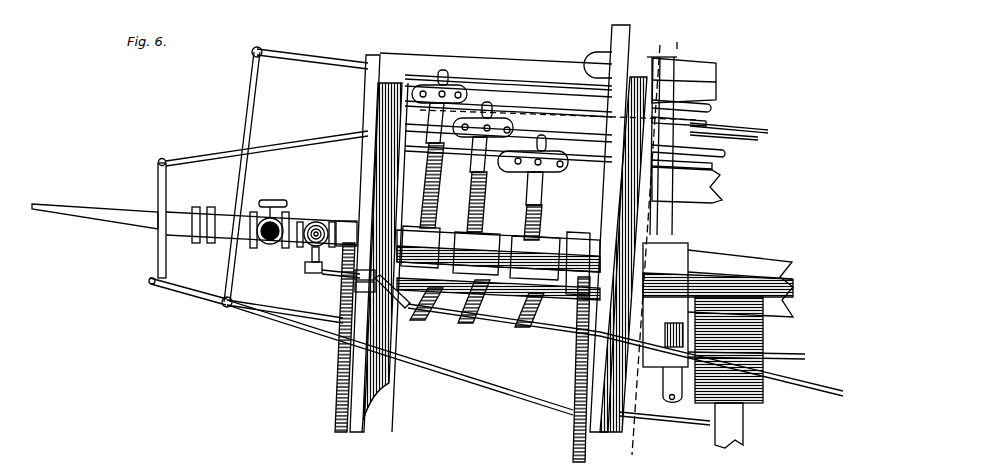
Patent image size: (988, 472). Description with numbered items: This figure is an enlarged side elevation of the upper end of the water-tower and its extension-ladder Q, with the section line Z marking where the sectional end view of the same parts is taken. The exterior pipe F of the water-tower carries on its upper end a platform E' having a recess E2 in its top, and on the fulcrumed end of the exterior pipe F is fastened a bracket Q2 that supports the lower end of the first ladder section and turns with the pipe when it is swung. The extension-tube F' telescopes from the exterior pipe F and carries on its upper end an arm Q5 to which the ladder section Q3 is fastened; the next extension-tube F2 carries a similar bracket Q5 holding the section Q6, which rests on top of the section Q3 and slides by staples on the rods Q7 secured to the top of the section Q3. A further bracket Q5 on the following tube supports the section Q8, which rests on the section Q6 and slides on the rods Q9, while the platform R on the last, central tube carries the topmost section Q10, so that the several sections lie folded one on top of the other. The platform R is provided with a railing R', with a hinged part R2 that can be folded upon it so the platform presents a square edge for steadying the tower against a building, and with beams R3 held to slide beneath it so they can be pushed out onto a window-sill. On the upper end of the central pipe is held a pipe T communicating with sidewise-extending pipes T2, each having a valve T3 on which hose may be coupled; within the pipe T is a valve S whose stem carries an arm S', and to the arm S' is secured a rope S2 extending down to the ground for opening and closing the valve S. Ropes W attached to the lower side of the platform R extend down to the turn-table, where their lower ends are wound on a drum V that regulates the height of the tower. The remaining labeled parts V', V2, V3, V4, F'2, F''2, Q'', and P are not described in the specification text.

The drum V is at (95, 205).
The pipe section V' is at (261, 213).
The clamp post V2 is at (160, 173).
The upper brace bar V3 is at (305, 139).
The lower brace bar V4 is at (202, 297).
The railing R' is at (234, 177).
The platform R is at (332, 240).
The hinged part R2 is at (338, 358).
The beams R3 is at (357, 405).
The pipe T is at (298, 212).
The sidewise-extending pipes T2 is at (277, 199).
The valve T3 is at (266, 259).
The valve S is at (303, 252).
The arm S' is at (322, 287).
The rope S2 is at (424, 323).
The recess E2 is at (345, 222).
The ropes W is at (399, 323).
The platform E' is at (545, 237).
The section line z z Z is at (654, 246).
The arm Q5 is at (433, 212).
The extension-tube F2 is at (440, 272).
The slide block F'2 is at (476, 271).
The slide block F''2 is at (535, 276).
The extension-ladder Q is at (685, 60).
The plate Q'' is at (703, 77).
The ladder section Q10 is at (712, 104).
The ladder section Q8 is at (712, 120).
The rods Q9 is at (748, 138).
The ladder section Q6 is at (712, 153).
The rods Q7 is at (686, 166).
The ladder section Q3 is at (710, 192).
The extension-tube F' is at (718, 295).
The exterior pipe F is at (740, 279).
The bracket leg P is at (668, 380).
The bracket Q2 is at (742, 420).